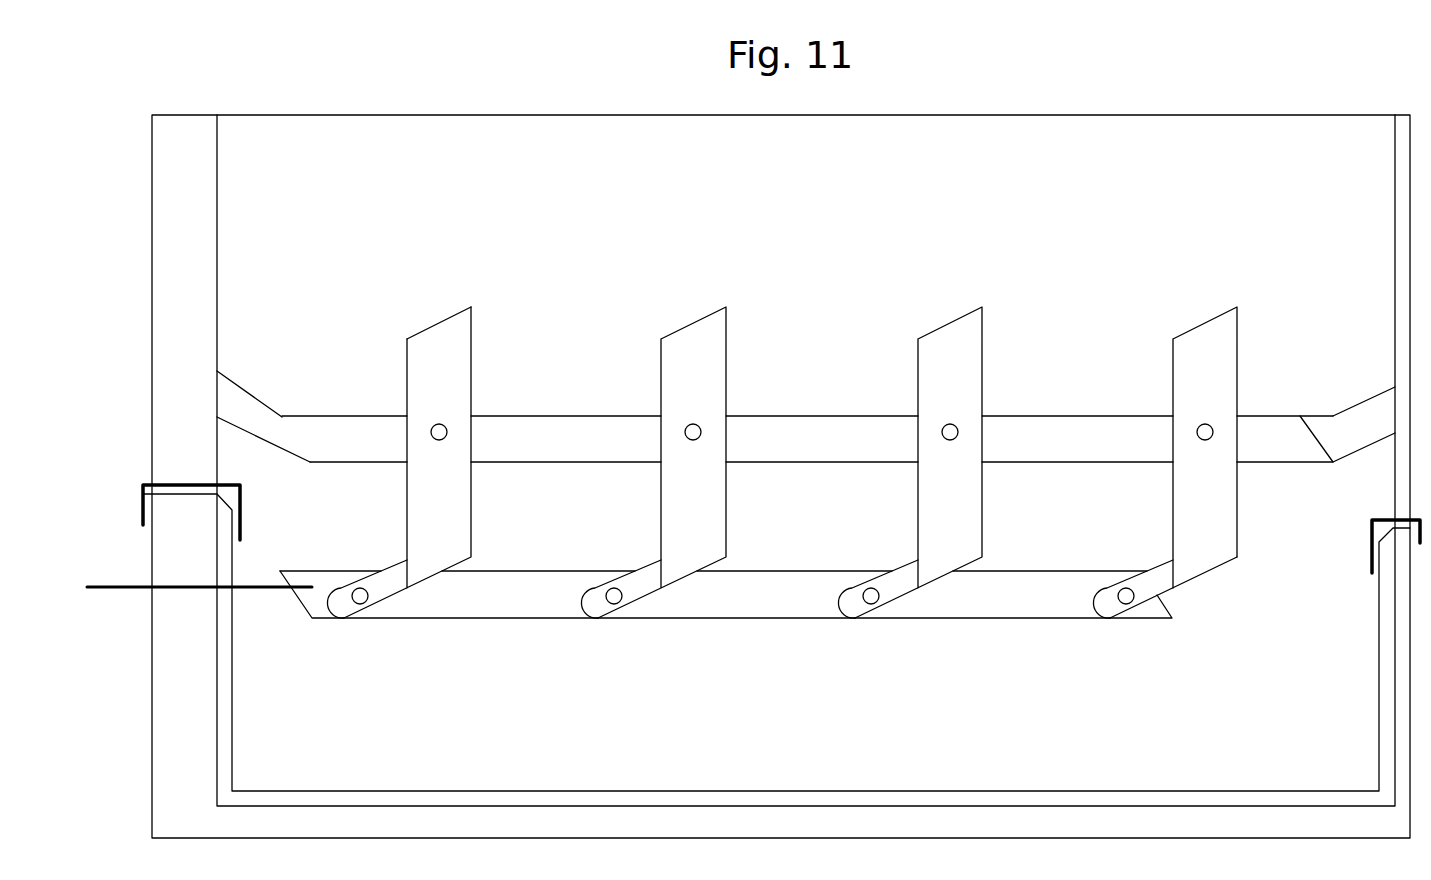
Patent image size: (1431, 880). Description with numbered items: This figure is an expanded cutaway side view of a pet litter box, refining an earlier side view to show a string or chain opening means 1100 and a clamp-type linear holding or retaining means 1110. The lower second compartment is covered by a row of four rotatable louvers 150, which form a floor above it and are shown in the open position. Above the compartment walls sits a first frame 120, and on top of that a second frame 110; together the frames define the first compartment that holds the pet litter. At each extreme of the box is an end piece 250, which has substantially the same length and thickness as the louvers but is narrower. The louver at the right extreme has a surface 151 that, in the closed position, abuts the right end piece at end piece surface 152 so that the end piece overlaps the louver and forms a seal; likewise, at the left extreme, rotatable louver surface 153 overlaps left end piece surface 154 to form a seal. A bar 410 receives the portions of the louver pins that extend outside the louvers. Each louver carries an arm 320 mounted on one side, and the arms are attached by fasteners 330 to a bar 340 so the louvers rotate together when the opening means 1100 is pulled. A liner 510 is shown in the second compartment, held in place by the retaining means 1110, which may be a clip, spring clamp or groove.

The first frame 120 is at (168, 243).
The second frame 110 is at (165, 540).
The linear holding or retaining means 1110 is at (148, 492).
The liner 510 is at (236, 552).
The opening means 1100 is at (132, 588).
The end piece 250 is at (806, 418).
The left end piece surface 154 is at (300, 432).
The end piece surface 152 is at (1315, 450).
The bar 410 is at (597, 448).
The rotatable louver 150 is at (809, 440).
The rotatable louver surface 153 is at (428, 318).
The rotatable louver surface 151 is at (1205, 580).
The arm 320 is at (340, 600).
The fastener 330 is at (437, 420).
The bar 340 is at (770, 602).